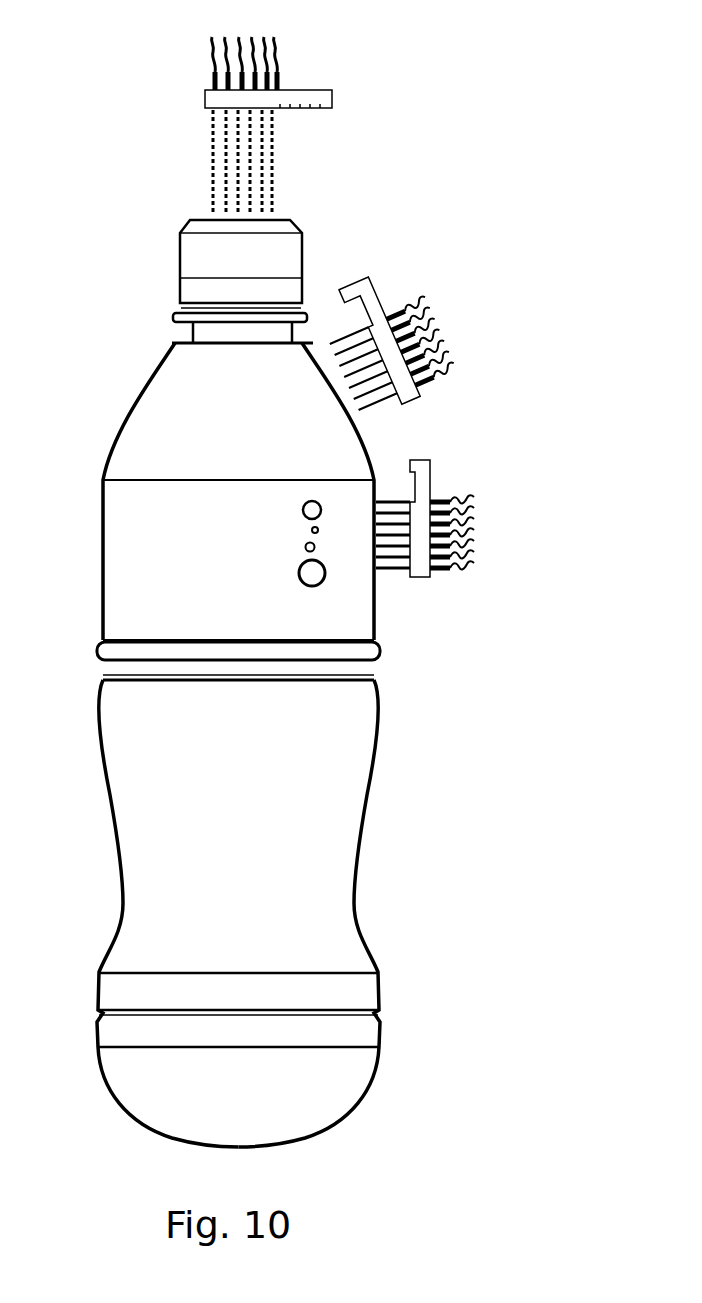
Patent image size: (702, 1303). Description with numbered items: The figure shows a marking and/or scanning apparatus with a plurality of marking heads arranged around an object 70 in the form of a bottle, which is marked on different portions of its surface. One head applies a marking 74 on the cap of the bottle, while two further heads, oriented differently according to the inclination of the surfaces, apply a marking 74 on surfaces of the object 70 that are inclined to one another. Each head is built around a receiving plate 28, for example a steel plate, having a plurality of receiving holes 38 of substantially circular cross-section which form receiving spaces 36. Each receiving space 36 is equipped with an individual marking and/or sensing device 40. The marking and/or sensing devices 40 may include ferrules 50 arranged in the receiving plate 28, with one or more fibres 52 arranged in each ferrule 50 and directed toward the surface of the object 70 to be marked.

The receiving plate 28 is at (314, 99).
The receiving space 36 is at (250, 338).
The receiving hole 38 is at (208, 110).
The marking and/or sensing device 40 is at (379, 346).
The ferrule 50 is at (422, 397).
The fibre 52 is at (217, 60).
The object 70 is at (338, 797).
The marking 74 is at (273, 213).